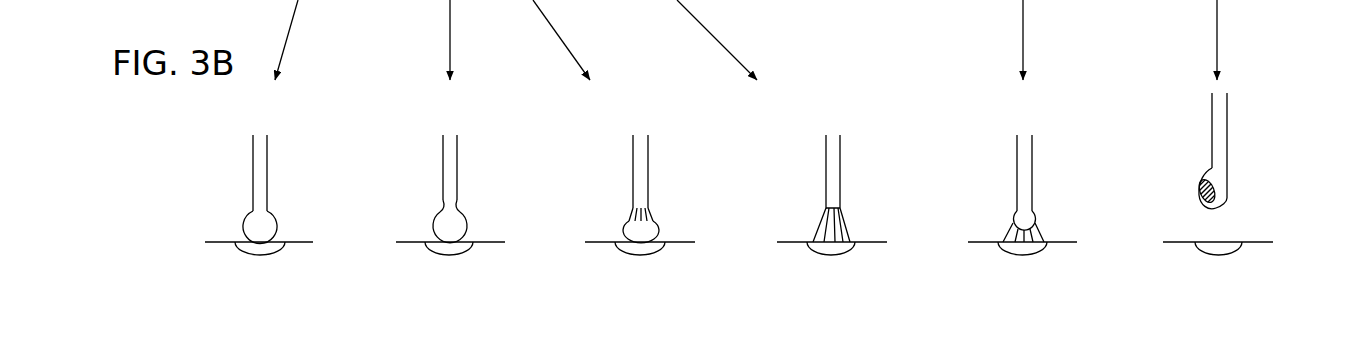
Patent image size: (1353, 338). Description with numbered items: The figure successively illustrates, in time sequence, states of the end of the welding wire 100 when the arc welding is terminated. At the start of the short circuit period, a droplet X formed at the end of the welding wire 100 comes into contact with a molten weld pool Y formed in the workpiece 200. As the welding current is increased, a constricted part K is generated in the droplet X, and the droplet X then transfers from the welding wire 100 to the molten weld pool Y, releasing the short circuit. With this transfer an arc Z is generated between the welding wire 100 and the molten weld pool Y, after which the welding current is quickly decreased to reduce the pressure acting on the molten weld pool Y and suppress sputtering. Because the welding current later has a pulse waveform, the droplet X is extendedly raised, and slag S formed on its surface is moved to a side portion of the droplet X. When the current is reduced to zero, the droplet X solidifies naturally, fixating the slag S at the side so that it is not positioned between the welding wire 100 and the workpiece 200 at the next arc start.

The welding wire 100 is at (252, 147).
The workpiece 200 is at (217, 240).
The droplet X is at (290, 213).
The molten weld pool Y is at (260, 257).
The arc Z is at (658, 213).
The constricted part K is at (466, 203).
The slag S is at (1200, 190).